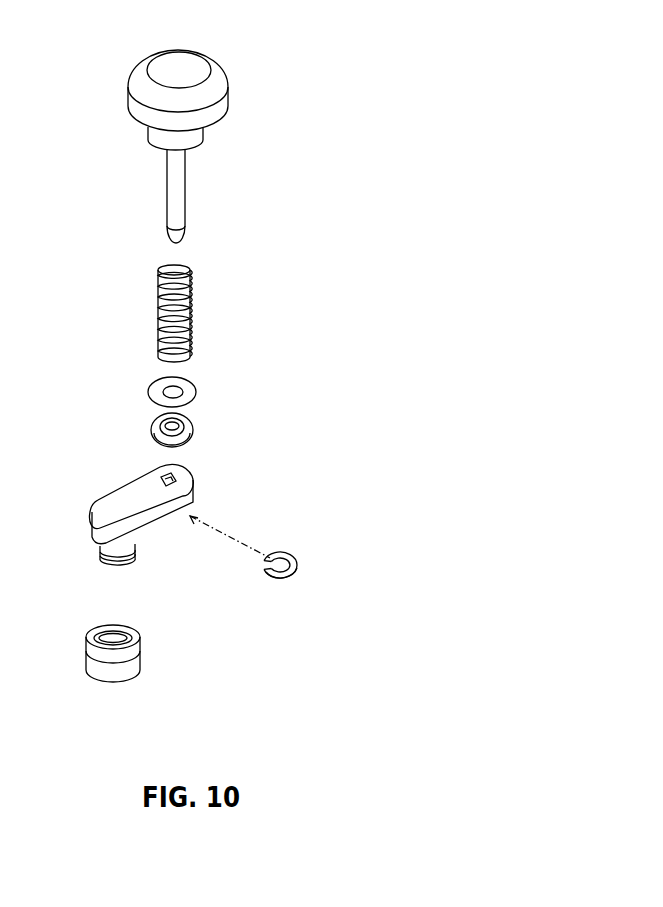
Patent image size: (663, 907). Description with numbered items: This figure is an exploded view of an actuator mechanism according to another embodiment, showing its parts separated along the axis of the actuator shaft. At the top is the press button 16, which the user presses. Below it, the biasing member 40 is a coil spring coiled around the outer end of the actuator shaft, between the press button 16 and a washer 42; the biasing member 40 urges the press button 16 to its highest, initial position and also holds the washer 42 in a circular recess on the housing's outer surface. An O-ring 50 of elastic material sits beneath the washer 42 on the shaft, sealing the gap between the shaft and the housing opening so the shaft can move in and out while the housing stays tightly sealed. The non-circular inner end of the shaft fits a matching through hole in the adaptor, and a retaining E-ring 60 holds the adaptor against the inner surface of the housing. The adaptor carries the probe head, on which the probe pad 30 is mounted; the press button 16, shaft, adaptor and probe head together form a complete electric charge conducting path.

The press button 16 is at (234, 78).
The biasing member 40 is at (198, 268).
The washer 42 is at (205, 382).
The O-ring 50 is at (203, 423).
The E-ring 60 is at (302, 552).
The probe pad 30 is at (149, 638).